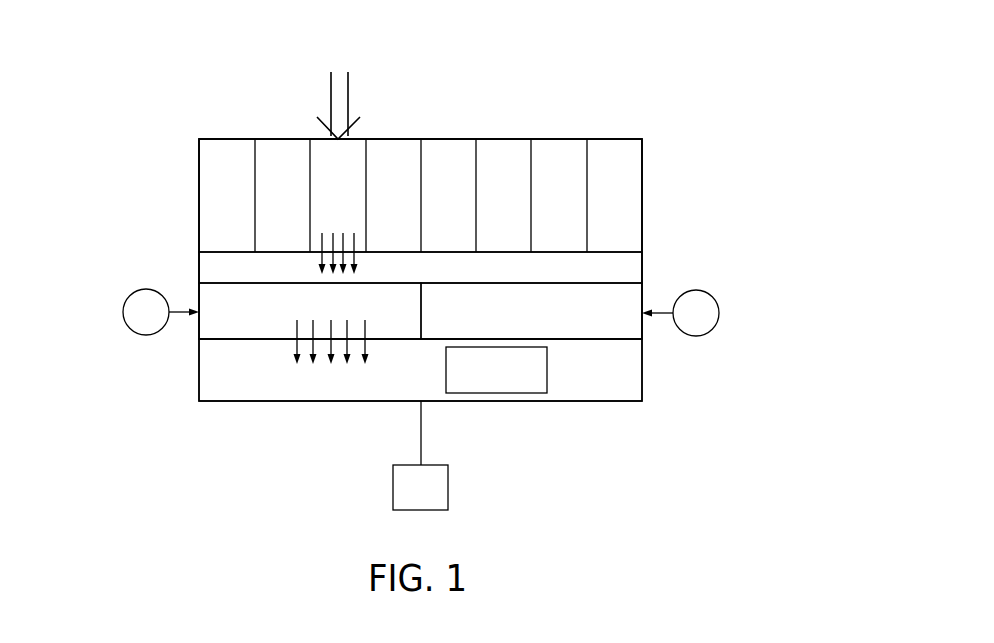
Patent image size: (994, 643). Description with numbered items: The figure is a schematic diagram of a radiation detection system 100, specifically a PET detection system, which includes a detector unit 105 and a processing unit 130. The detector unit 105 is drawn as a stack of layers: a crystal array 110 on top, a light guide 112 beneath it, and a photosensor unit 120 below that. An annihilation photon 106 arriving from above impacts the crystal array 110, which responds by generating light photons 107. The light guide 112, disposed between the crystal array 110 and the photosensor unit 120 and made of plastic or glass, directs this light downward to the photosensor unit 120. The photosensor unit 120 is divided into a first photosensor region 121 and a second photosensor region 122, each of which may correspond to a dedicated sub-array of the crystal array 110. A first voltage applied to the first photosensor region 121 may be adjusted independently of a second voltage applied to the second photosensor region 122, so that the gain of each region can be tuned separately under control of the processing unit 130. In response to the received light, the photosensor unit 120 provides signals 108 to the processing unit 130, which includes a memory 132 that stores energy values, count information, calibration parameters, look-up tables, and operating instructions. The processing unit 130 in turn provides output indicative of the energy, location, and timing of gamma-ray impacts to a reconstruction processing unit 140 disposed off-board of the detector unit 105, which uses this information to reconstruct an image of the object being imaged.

The radiation detection system 100 is at (632, 70).
The detector unit 105 is at (727, 137).
The annihilation photon 106 is at (350, 97).
The light photons 107 is at (376, 262).
The signals 108 is at (382, 355).
The crystal array 110 is at (199, 193).
The light guide 112 is at (199, 268).
The photosensor unit 120 is at (95, 283).
The first photosensor region 121 is at (347, 310).
The second photosensor region 122 is at (545, 322).
The processing unit 130 is at (644, 373).
The memory 132 is at (548, 366).
The reconstruction processing unit 140 is at (404, 500).